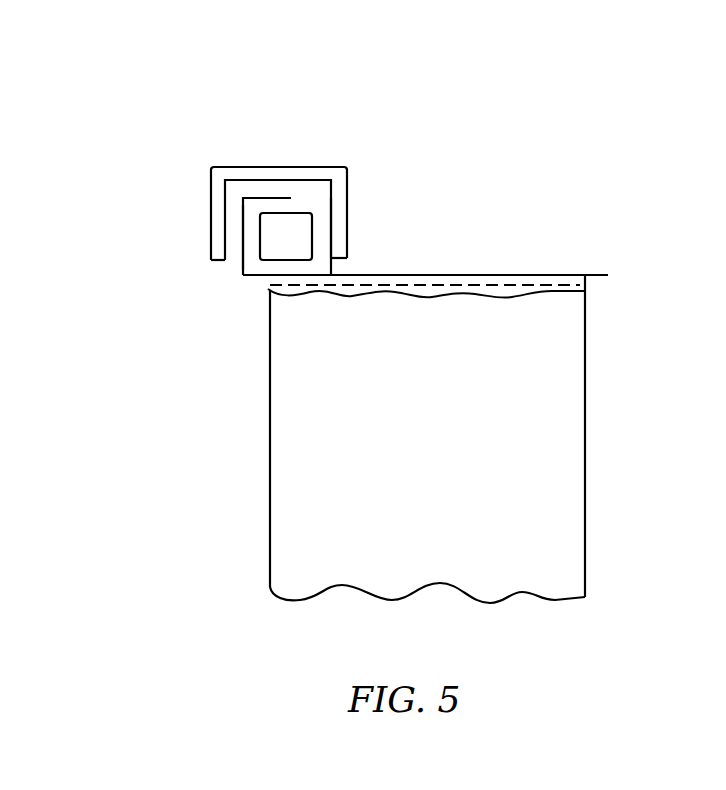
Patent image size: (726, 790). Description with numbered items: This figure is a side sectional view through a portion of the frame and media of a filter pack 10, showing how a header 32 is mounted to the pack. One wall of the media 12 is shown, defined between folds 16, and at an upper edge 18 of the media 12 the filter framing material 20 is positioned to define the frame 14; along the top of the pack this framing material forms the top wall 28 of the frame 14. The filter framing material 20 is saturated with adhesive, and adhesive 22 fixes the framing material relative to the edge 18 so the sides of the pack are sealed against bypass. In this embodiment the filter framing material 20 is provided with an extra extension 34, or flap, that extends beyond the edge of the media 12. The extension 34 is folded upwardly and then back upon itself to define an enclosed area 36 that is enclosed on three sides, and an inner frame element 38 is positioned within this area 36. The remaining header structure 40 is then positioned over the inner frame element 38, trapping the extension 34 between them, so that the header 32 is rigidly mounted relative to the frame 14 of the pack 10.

The pack 10 is at (592, 147).
The media 12 is at (602, 398).
The frame 14 is at (592, 260).
The folds 16 is at (270, 455).
The upper edge 18 is at (425, 288).
The filter framing material 20 is at (425, 222).
The adhesive 22 is at (386, 287).
The top wall 28 is at (503, 275).
The header 32 is at (252, 157).
The extension 34 is at (242, 266).
The enclosed area 36 is at (252, 228).
The inner frame element 38 is at (300, 230).
The header structure 40 is at (298, 167).